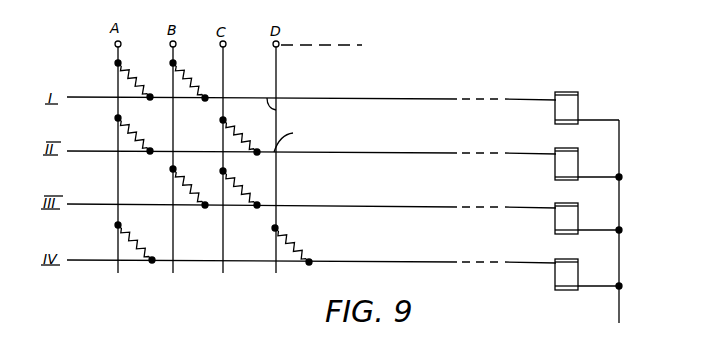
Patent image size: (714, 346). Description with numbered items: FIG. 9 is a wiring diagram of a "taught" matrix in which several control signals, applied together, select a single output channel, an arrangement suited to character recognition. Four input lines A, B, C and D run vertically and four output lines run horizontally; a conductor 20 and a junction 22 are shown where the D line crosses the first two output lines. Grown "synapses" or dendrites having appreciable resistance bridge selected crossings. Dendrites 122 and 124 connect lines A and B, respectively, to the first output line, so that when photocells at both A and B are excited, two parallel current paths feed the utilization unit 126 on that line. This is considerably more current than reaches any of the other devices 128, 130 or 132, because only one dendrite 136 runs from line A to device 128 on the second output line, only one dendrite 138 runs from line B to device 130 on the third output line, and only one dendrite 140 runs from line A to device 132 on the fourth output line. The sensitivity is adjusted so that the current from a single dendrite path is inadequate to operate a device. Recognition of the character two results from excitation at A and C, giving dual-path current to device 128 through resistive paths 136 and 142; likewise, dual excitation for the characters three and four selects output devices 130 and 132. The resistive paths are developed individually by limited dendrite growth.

The conductor D 20 is at (282, 77).
The conductor junction 22 is at (280, 117).
The dendrite 122 is at (148, 57).
The dendrite 124 is at (203, 57).
The utilization unit 126 is at (579, 103).
The output device 128 is at (565, 148).
The output device 130 is at (565, 203).
The output device 132 is at (565, 259).
The dendrite 136 is at (152, 122).
The dendrite 138 is at (204, 172).
The dendrite 140 is at (152, 226).
The resistive path 142 is at (245, 137).